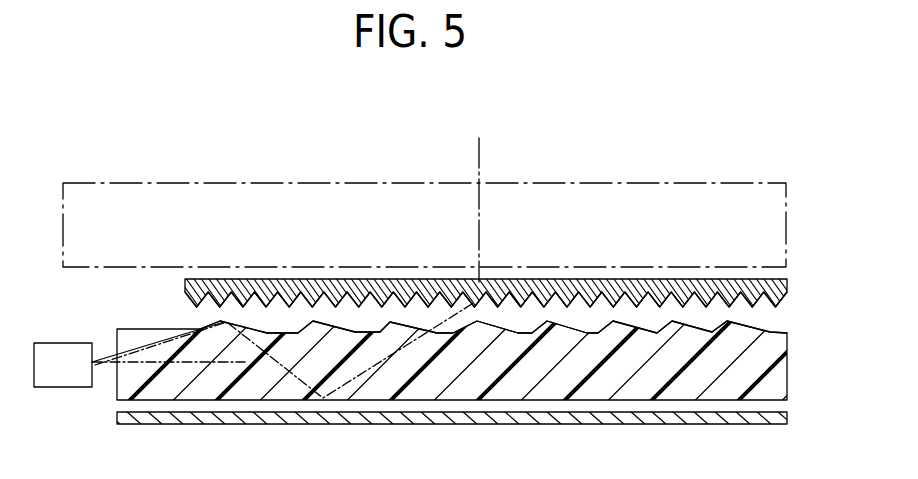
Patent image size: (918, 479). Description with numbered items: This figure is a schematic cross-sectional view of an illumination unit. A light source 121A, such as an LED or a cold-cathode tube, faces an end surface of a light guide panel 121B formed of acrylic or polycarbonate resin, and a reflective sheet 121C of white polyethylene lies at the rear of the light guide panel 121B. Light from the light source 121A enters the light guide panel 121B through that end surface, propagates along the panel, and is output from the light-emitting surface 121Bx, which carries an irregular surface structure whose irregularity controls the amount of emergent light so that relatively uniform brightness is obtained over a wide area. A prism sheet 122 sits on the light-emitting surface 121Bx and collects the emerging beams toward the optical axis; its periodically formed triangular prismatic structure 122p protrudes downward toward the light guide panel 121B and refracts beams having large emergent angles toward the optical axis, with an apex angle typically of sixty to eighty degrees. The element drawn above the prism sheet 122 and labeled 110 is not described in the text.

The display panel 110 is at (655, 183).
The prism sheet 122 is at (215, 287).
The prismatic structure 122p is at (774, 306).
The light guide panel 121B is at (777, 371).
The light-emitting surface 121Bx is at (226, 323).
The reflective sheet 121C is at (787, 416).
The light source 121A is at (62, 378).